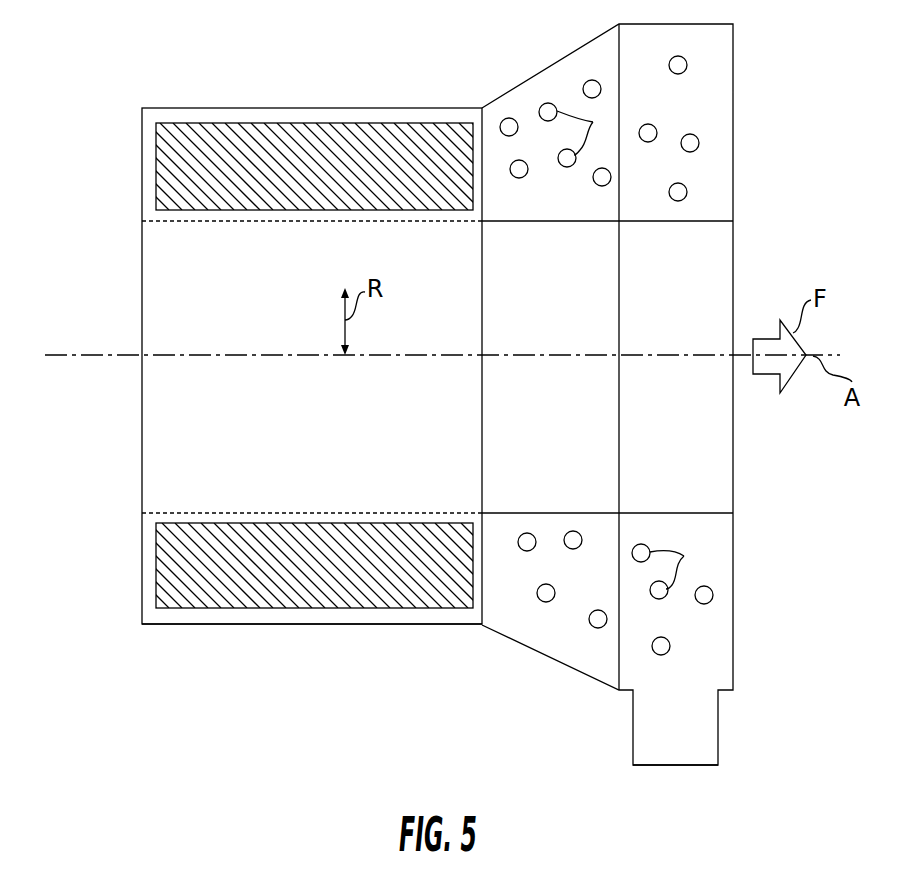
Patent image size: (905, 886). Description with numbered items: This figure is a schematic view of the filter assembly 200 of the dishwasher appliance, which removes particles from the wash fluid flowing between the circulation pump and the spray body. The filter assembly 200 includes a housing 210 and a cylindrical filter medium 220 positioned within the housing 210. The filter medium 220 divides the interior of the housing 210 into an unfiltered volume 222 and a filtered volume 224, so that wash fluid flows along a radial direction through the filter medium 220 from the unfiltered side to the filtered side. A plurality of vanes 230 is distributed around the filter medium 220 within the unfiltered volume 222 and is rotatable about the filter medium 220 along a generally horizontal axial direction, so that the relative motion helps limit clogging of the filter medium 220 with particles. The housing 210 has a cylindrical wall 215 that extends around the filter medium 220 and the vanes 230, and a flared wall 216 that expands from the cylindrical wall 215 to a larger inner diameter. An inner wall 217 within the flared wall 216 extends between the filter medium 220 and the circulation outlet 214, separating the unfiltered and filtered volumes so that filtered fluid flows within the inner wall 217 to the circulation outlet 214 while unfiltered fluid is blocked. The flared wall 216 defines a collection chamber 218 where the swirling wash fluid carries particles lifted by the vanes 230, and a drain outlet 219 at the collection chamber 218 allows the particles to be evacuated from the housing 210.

The filter assembly 200 is at (140, 50).
The housing 210 is at (142, 425).
The circulation outlet 214 is at (700, 452).
The cylindrical wall 215 is at (340, 625).
The flared wall 216 is at (540, 655).
The inner wall 217 is at (548, 221).
The collection chamber 218 is at (707, 652).
The drain outlet 219 is at (675, 768).
The filter medium 220 is at (312, 510).
The unfiltered volume 222 is at (185, 282).
The filtered volume 224 is at (708, 102).
The vanes 230 is at (310, 147).